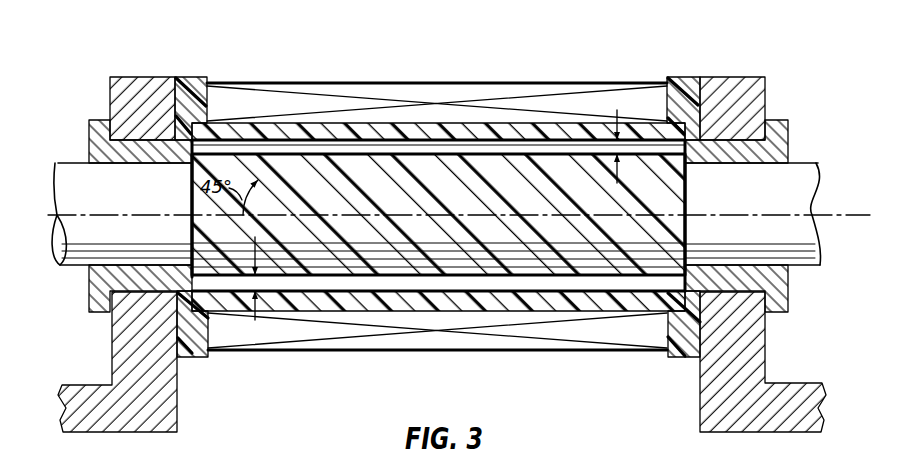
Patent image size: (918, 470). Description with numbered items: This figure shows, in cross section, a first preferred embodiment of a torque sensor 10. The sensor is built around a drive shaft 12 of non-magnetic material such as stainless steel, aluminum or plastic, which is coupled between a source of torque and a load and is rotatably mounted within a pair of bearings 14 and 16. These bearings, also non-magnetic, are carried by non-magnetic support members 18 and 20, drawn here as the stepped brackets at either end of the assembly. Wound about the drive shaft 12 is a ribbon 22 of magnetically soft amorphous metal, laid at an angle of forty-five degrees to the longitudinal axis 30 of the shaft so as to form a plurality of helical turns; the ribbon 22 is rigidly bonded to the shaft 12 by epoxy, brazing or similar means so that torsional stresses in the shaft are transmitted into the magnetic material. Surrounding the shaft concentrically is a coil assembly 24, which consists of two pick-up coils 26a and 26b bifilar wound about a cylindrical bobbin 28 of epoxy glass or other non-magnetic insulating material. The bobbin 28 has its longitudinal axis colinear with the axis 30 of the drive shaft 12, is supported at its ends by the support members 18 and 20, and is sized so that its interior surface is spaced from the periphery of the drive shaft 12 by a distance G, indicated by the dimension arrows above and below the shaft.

The torque sensor 10 is at (598, 66).
The drive shaft 12 is at (795, 166).
The bearing 14 is at (87, 133).
The bearing 16 is at (733, 145).
The support member 18 is at (122, 338).
The support member 20 is at (758, 344).
The ribbon 22 is at (557, 192).
The coil assembly 24 is at (273, 83).
The pick-up coil 26a is at (447, 90).
The pick-up coil 26b is at (437, 330).
The bobbin 28 is at (193, 78).
The longitudinal axis 30 is at (762, 205).
The distance G is at (619, 146).